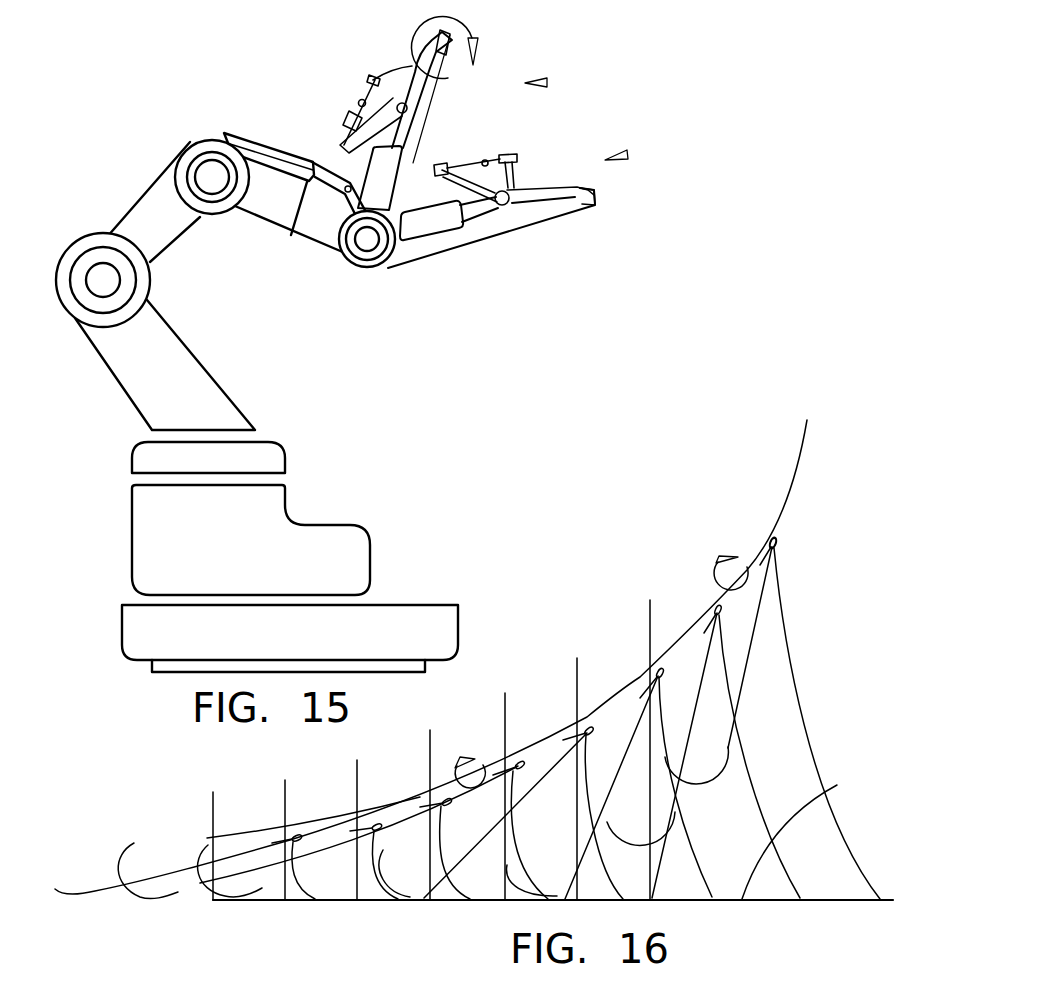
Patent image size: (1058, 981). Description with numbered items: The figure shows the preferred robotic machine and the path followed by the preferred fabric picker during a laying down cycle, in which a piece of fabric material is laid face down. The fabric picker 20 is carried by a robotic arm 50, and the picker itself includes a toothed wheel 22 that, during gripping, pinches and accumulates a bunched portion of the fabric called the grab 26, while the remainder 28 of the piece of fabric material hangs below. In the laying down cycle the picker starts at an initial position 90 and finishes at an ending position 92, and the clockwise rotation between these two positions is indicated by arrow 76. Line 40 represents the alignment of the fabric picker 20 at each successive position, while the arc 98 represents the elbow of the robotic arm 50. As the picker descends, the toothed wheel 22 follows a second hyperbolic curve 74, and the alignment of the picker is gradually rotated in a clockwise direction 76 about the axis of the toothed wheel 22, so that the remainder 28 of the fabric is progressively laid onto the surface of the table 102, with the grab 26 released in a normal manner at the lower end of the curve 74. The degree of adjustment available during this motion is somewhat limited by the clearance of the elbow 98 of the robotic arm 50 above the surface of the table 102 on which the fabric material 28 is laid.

In FIG. 15, the robotic arm 50 is at (252, 80).
In FIG. 15, the fabric picker 20 is at (410, 77).
In FIG. 15, the toothed wheel 22 is at (578, 207).
In FIG. 15, the line representing alignment of the fabric picker 40 is at (476, 238).
In FIG. 16, the line representing alignment of the fabric picker 40 is at (243, 872).
In FIG. 15, the elbow of the robotic arm 98 is at (362, 272).
In FIG. 16, the elbow of the robotic arm 98 is at (147, 897).
In FIG. 15, the arrow indicating clockwise rotation 76 is at (470, 30).
In FIG. 16, the arrow indicating clockwise rotation 76 is at (718, 562).
In FIG. 15, the initial position 90 is at (545, 82).
In FIG. 15, the ending position 92 is at (627, 153).
In FIG. 16, the grab 26 is at (777, 542).
In FIG. 16, the remainder of the piece of fabric material 28 is at (800, 690).
In FIG. 16, the second hyperbolic curve 74 is at (615, 690).
In FIG. 16, the table 102 is at (817, 829).